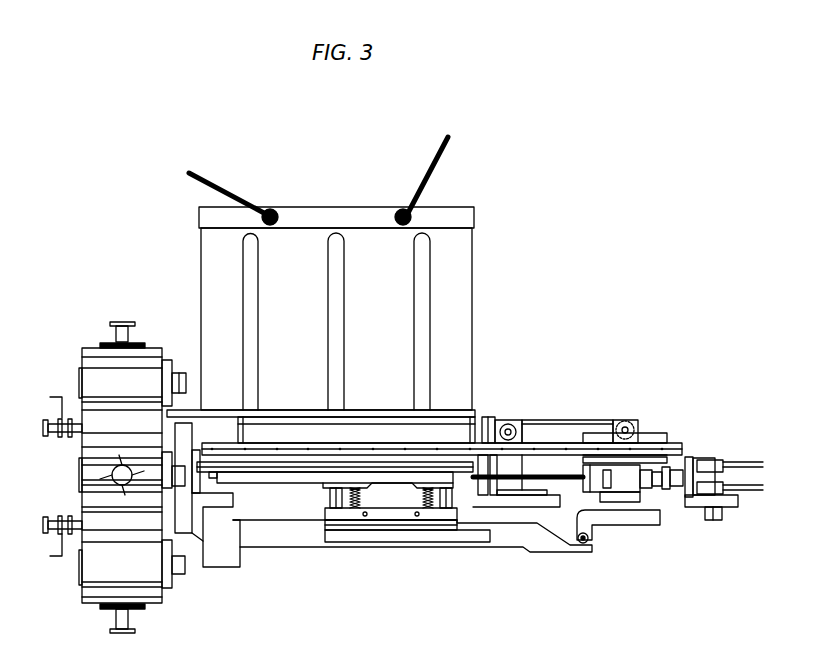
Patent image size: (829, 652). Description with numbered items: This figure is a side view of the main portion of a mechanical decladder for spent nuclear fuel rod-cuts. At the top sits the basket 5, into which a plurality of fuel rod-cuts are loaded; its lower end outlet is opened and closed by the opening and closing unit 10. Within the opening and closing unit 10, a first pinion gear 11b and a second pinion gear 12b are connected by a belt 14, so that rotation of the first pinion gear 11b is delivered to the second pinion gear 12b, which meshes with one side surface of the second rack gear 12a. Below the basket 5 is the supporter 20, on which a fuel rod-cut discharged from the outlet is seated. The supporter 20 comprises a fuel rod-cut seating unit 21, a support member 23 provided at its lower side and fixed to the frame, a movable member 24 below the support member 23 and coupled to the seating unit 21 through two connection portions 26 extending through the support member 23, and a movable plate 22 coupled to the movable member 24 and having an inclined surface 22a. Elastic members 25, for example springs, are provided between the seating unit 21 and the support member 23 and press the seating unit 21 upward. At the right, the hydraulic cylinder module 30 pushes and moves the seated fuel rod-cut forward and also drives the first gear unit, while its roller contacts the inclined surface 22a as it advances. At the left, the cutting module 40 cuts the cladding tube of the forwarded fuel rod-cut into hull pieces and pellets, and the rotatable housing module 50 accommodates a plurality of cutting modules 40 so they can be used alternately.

The basket 5 is at (490, 278).
The opening and closing unit 10 is at (440, 421).
The first pinion gear 11b is at (630, 419).
The second rack gear 12a is at (490, 425).
The second pinion gear 12b is at (512, 421).
The belt 14 is at (595, 431).
The supporter 20 is at (363, 550).
The fuel rod-cut seating unit 21 is at (441, 484).
The movable plate 22 is at (533, 548).
The inclined surface 22a is at (556, 546).
The support member 23 is at (400, 522).
The movable member 24 is at (463, 543).
The elastic member 25 is at (352, 510).
The connection portion 26 is at (334, 505).
The hydraulic cylinder module 30 is at (745, 522).
The cutting module 40 is at (183, 373).
The rotatable housing module 50 is at (76, 345).